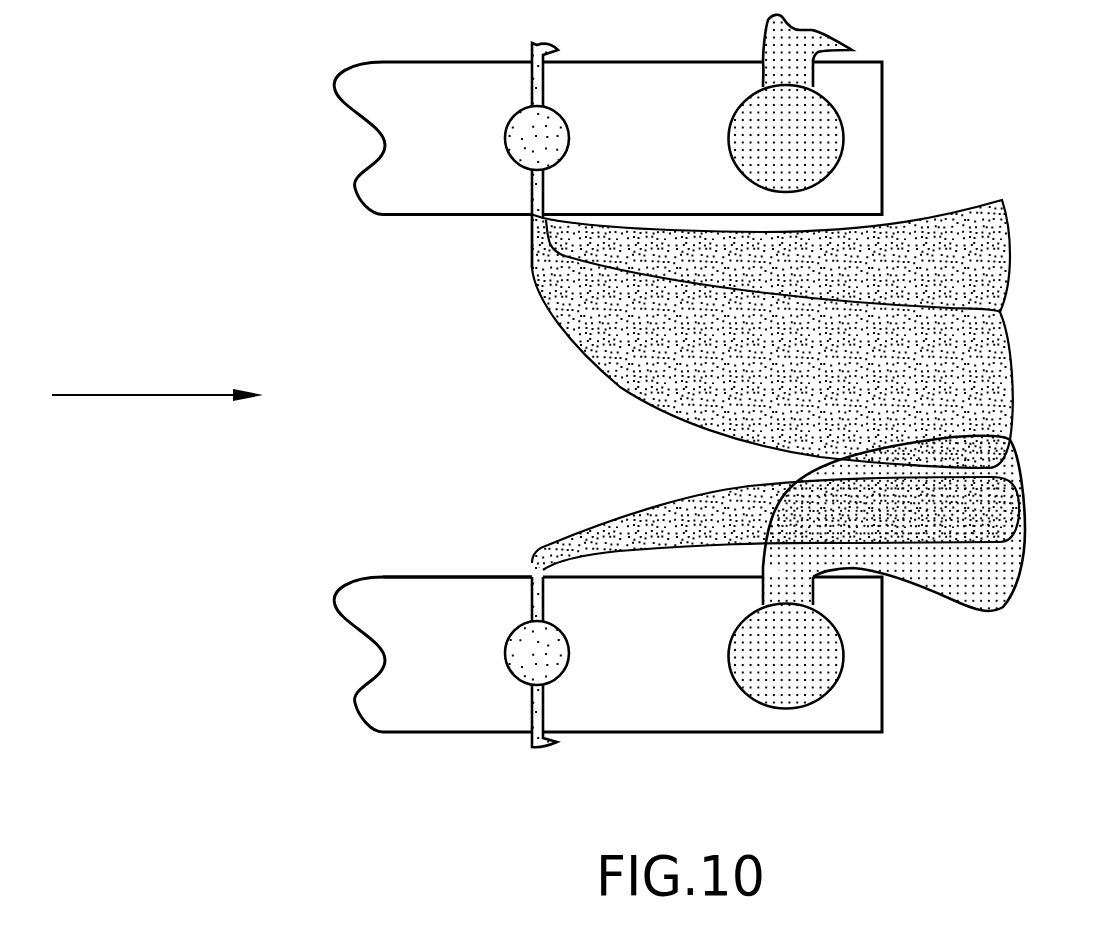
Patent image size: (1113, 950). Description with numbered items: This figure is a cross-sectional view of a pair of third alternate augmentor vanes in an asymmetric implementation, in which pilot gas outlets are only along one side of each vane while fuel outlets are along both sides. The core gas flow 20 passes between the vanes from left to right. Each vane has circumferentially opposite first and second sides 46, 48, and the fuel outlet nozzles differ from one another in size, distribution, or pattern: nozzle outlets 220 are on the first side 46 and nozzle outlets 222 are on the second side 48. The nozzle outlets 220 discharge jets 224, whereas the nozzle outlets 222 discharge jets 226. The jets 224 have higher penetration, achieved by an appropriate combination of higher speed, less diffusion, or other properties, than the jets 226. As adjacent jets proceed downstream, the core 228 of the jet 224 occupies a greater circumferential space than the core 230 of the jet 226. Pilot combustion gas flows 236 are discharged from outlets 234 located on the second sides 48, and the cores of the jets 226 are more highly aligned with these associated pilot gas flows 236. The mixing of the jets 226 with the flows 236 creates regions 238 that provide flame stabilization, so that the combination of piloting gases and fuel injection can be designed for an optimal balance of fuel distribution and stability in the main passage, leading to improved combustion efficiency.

The core gas flow 20 is at (142, 395).
The first side 46 is at (410, 732).
The second side 48 is at (413, 577).
The nozzle outlets 220 is at (527, 220).
The nozzle outlets 222 is at (527, 570).
The jets 224 is at (533, 281).
The jets 226 is at (548, 537).
The core of jet 228 is at (617, 343).
The core of jet 230 is at (637, 525).
The outlets 234 is at (760, 565).
The pilot combustion gas flows 236 is at (963, 578).
The regions 238 is at (967, 542).